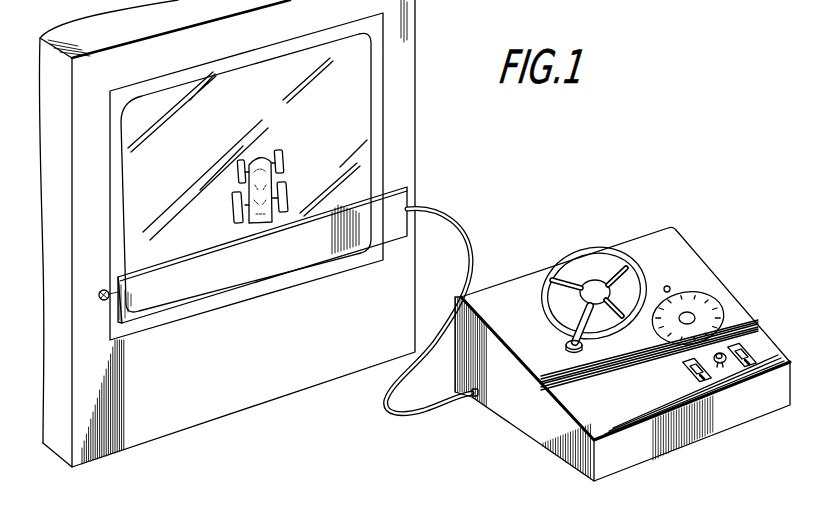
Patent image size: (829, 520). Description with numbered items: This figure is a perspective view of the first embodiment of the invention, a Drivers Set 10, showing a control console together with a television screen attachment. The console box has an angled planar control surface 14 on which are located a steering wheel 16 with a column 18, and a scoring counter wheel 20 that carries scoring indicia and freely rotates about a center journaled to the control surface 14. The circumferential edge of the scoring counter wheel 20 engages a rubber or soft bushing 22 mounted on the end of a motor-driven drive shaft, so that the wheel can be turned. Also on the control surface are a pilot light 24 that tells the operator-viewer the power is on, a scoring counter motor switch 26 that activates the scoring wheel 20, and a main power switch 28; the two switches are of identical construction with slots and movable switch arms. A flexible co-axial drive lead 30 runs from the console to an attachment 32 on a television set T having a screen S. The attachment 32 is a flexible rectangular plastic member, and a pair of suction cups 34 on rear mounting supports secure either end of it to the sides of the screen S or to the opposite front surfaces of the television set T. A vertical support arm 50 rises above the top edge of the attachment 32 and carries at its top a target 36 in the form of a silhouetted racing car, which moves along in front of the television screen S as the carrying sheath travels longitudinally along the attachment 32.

The Drivers Set 10 is at (503, 438).
The angled planar control surface 14 is at (742, 327).
The steering wheel 16 is at (588, 258).
The column 18 is at (569, 338).
The scoring counter wheel 20 is at (710, 300).
The rubber or soft bushing 22 is at (674, 270).
The pilot light 24 is at (720, 364).
The scoring counter motor switch 26 is at (755, 358).
The main power switch 28 is at (688, 373).
The flexible co-axial drive lead 30 is at (462, 228).
The attachment 32 is at (398, 200).
The suction cups 34 is at (103, 300).
The target 36 is at (266, 162).
The vertical support arm 50 is at (262, 221).
The television set T is at (416, 70).
The screen S is at (364, 137).